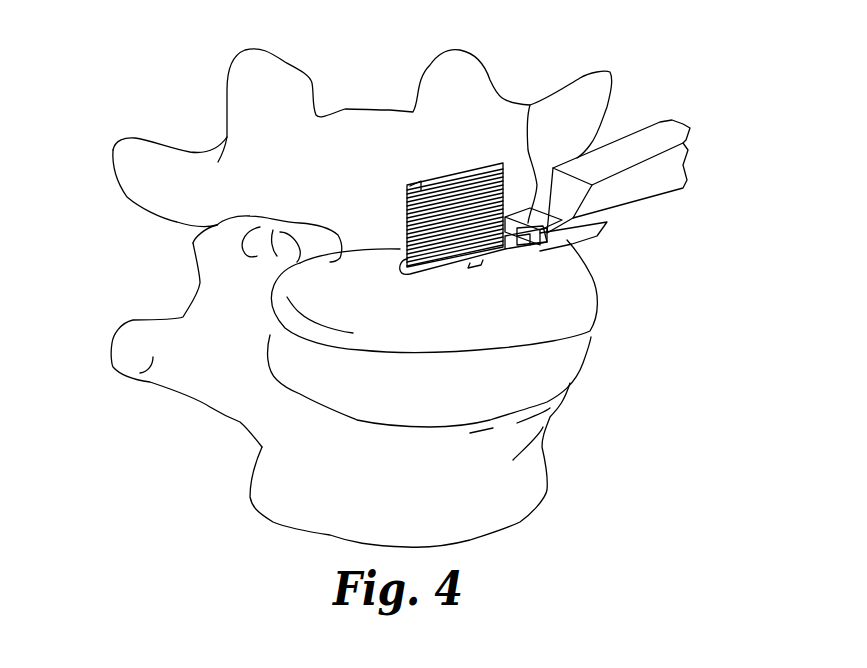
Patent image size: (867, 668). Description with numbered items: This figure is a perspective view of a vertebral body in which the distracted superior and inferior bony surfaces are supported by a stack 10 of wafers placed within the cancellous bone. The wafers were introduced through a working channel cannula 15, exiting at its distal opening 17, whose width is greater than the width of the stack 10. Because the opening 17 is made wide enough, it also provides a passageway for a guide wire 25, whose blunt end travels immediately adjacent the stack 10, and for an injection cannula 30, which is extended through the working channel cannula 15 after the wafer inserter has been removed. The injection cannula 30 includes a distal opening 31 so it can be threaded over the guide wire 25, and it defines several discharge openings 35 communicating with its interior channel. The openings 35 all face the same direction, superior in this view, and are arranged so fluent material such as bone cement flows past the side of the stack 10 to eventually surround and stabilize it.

The stack 10 is at (516, 152).
The working channel cannula 15 is at (642, 142).
The distal opening 17 is at (603, 224).
The guide wire 25 is at (483, 263).
The injection cannula 30 is at (531, 248).
The distal opening 31 is at (515, 246).
The discharge openings 35 is at (535, 190).